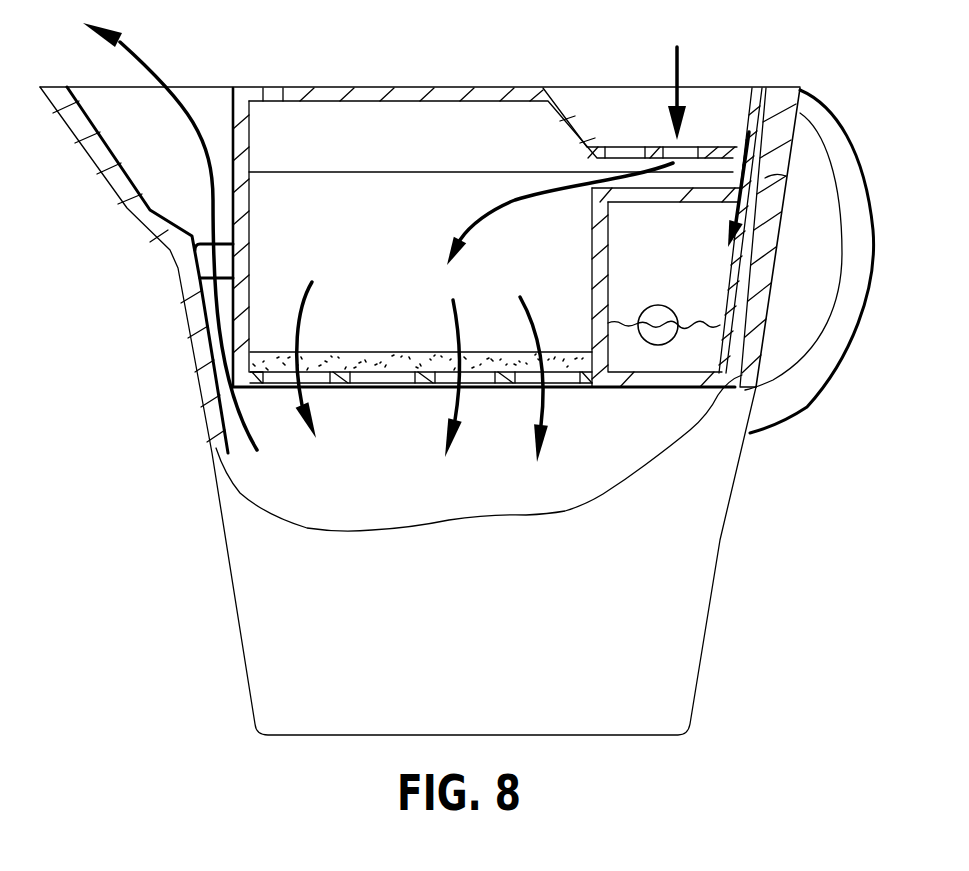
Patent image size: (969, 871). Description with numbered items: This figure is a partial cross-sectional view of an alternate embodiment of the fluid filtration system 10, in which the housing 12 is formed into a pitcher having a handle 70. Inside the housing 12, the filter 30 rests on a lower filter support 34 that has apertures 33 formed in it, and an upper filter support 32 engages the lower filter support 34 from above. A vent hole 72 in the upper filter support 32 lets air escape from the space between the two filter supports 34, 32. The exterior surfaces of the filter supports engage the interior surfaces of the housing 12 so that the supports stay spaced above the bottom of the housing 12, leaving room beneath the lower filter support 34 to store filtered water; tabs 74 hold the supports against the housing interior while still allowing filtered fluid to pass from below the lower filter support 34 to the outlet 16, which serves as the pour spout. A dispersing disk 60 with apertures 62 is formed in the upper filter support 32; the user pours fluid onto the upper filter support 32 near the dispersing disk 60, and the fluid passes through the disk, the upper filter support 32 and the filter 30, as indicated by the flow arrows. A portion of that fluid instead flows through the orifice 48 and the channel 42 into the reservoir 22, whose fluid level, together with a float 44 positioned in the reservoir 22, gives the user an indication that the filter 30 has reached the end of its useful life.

The fluid filtration system 10 is at (778, 481).
The housing 12 is at (787, 102).
The outlet 16 is at (85, 97).
The reservoir 22 is at (645, 243).
The filter 30 is at (365, 355).
The upper filter support 32 is at (358, 88).
The apertures 33 is at (487, 383).
The lower filter support 34 is at (427, 383).
The channel 42 is at (773, 179).
The float 44 is at (660, 305).
The orifice 48 is at (747, 140).
The dispersing disk 60 is at (693, 147).
The apertures 62 is at (615, 147).
The handle 70 is at (822, 118).
The vent hole 72 is at (272, 88).
The tabs 74 is at (203, 262).